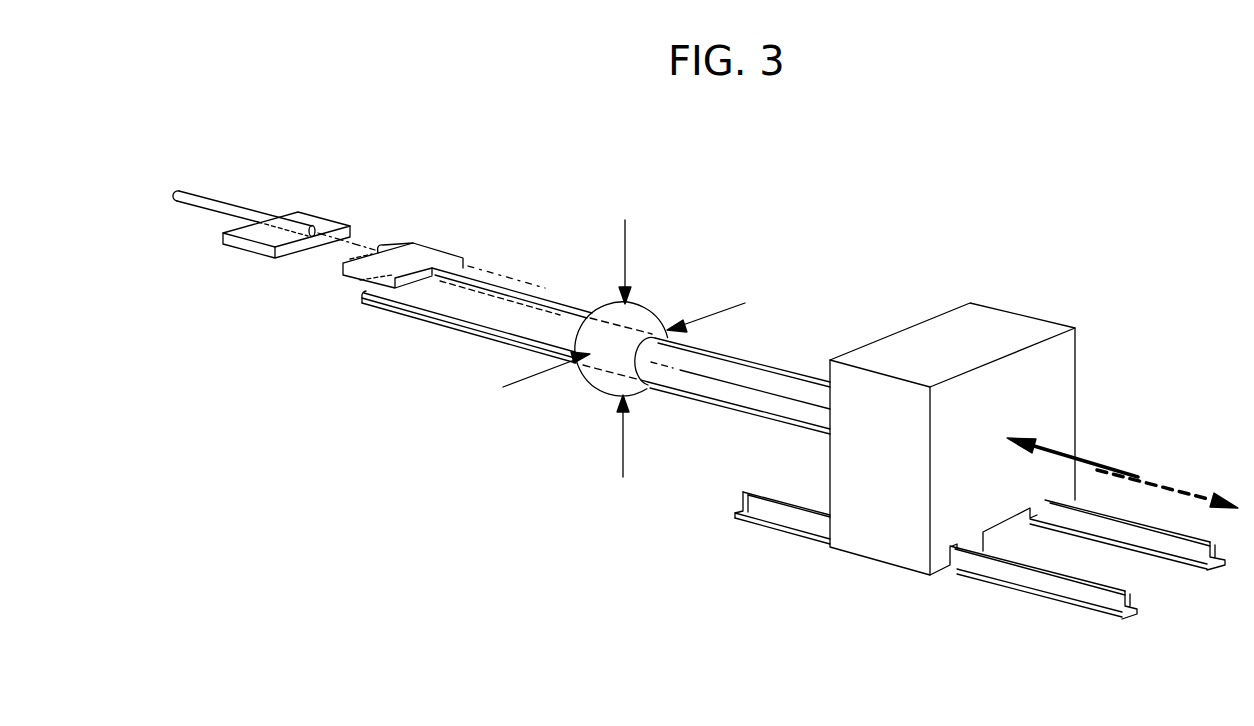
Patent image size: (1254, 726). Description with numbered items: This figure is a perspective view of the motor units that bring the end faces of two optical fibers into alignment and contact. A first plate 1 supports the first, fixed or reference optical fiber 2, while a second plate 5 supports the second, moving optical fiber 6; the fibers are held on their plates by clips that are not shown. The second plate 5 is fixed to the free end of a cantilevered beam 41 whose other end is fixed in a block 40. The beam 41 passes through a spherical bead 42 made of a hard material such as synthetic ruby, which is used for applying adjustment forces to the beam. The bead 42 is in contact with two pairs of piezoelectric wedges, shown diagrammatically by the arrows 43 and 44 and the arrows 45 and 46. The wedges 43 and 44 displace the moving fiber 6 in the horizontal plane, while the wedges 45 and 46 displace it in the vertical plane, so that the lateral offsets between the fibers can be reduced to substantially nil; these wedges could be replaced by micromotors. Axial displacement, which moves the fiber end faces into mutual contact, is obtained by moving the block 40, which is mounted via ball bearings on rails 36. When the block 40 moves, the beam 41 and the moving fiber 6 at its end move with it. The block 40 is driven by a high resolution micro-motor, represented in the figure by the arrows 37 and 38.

The first plate 1 is at (255, 245).
The first optical fiber 2 is at (207, 202).
The second plate 5 is at (353, 273).
The second optical fiber 6 is at (393, 248).
The rails 36 is at (1120, 587).
The arrow representing micro-motor 37 is at (1095, 460).
The arrow representing micro-motor 38 is at (1207, 490).
The block 40 is at (1017, 330).
The cantilevered beam 41 is at (770, 380).
The spherical bead 42 is at (638, 320).
The piezoelectric wedge 43 is at (517, 382).
The piezoelectric wedge 44 is at (722, 310).
The piezoelectric wedge 45 is at (625, 248).
The piezoelectric wedge 46 is at (623, 448).